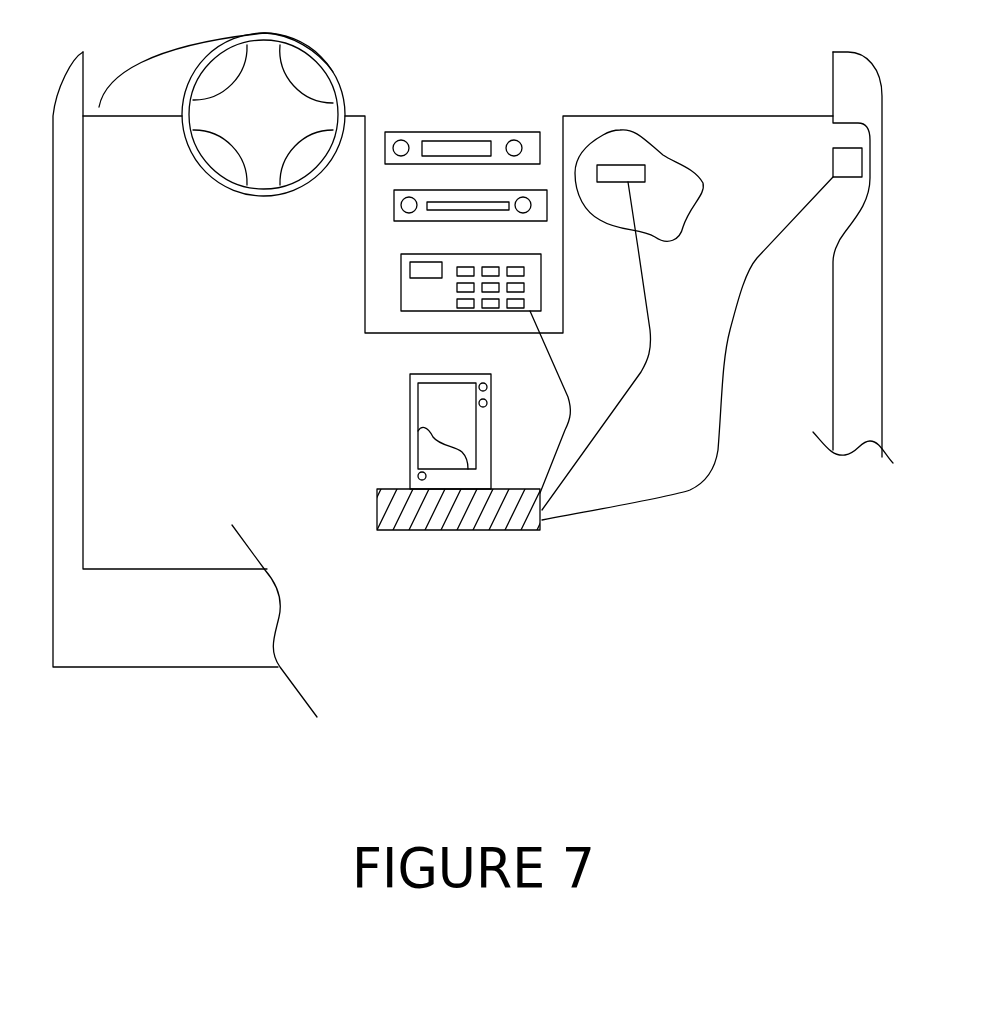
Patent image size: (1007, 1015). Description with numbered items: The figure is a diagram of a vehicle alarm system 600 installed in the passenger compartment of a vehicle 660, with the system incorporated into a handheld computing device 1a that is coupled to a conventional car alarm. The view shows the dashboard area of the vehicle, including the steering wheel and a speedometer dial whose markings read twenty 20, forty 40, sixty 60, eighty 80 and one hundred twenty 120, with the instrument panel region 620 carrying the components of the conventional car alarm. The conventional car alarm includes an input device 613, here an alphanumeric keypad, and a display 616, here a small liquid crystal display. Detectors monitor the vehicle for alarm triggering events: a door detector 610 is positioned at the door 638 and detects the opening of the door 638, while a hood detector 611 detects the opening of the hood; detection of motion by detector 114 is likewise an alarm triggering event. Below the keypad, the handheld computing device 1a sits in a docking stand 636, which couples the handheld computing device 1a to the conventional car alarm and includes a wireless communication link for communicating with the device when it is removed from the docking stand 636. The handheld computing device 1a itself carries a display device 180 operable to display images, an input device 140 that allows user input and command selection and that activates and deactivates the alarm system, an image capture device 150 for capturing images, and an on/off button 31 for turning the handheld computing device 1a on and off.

The handheld computing device 1a is at (410, 412).
The on/off button 31 is at (418, 472).
The detector 114 is at (487, 403).
The input device 140 is at (447, 426).
The image capture device 150 is at (487, 387).
The display device 180 is at (443, 448).
The vehicle alarm system 600 is at (725, 647).
The door detector 610 is at (833, 158).
The hood detector 611 is at (645, 173).
The input device 613 is at (503, 254).
The display 616 is at (410, 264).
The dashboard 620 is at (372, 354).
The docking stand 636 is at (498, 531).
The door 638 is at (833, 308).
The vehicle 660 is at (185, 384).
The speedometer marking 20 is at (216, 72).
The speedometer marking 40 is at (140, 78).
The speedometer marking 60 is at (173, 65).
The speedometer marking 80 is at (205, 57).
The speedometer marking 120 is at (298, 73).